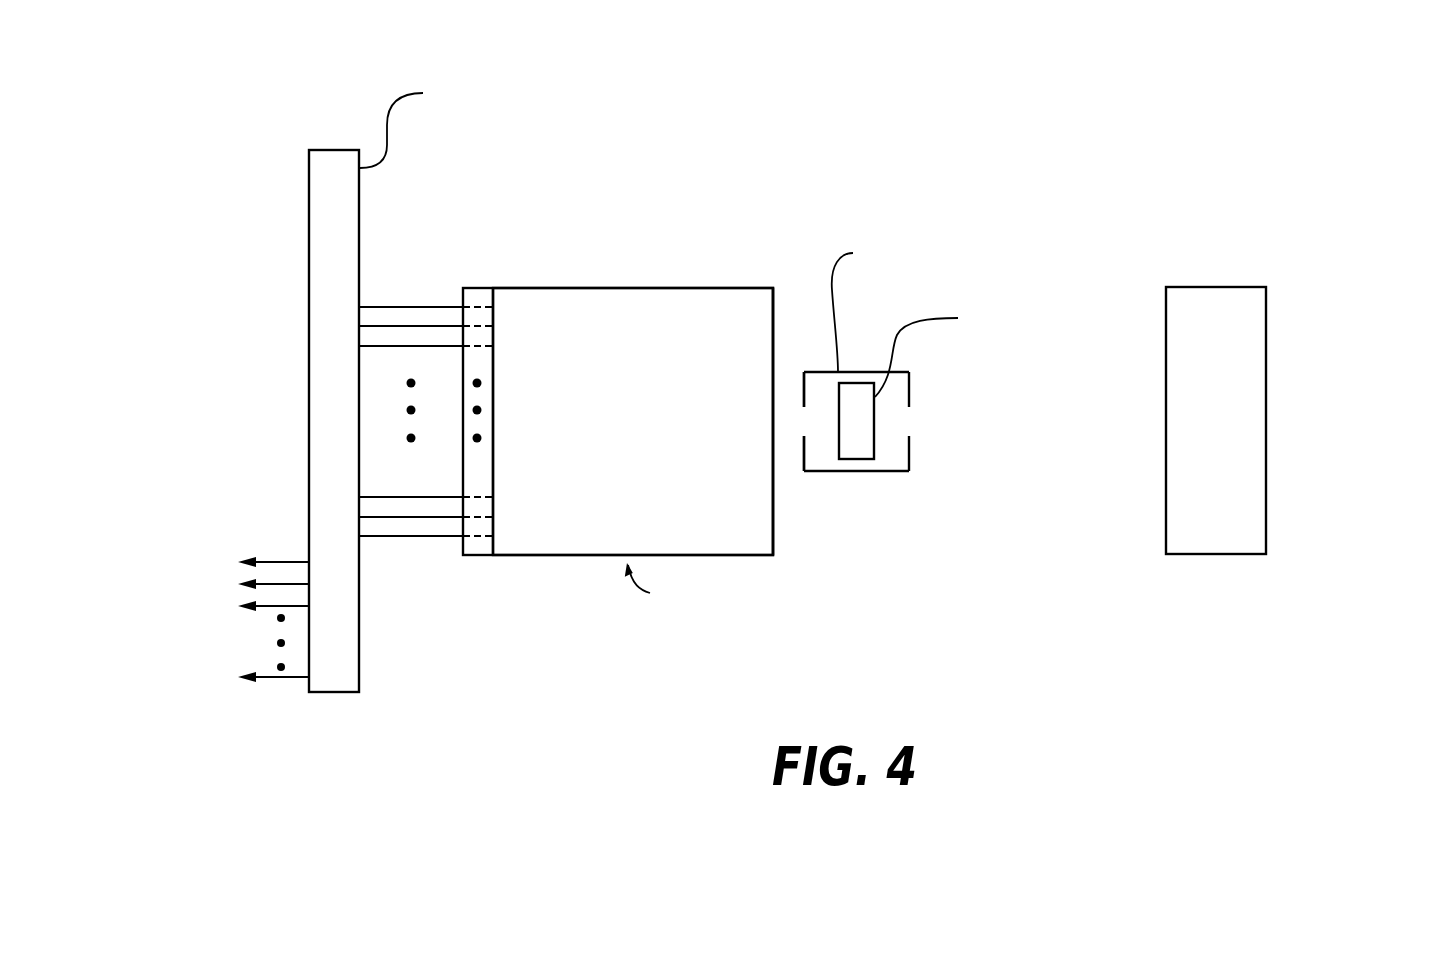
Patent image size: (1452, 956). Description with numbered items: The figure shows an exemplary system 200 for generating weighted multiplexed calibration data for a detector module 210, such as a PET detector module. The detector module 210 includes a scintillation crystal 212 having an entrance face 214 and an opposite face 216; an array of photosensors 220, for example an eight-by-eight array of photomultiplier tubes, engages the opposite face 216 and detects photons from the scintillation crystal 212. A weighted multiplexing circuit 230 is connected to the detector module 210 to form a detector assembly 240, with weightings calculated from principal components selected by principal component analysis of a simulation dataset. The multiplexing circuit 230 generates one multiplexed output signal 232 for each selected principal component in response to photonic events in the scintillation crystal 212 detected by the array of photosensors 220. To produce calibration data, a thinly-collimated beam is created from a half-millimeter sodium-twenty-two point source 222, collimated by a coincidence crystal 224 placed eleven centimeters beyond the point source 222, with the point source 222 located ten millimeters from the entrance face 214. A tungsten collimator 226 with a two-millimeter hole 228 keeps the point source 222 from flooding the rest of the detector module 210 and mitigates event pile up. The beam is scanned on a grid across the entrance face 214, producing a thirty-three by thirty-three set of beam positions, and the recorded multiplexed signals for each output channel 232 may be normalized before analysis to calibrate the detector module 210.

The system 200 is at (1083, 131).
The detector module 210 is at (508, 564).
The scintillation crystal 212 is at (577, 328).
The entrance face 214 is at (773, 492).
The opposite face 216 is at (488, 327).
The array of photosensors 220 is at (457, 545).
The point source 222 is at (870, 420).
The coincidence crystal 224 is at (1226, 562).
The collimator 226 is at (885, 472).
The hole 228 is at (803, 419).
The weighted multiplexing circuit 230 is at (309, 205).
The multiplexed output signal 232 is at (281, 562).
The detector assembly 240 is at (676, 186).